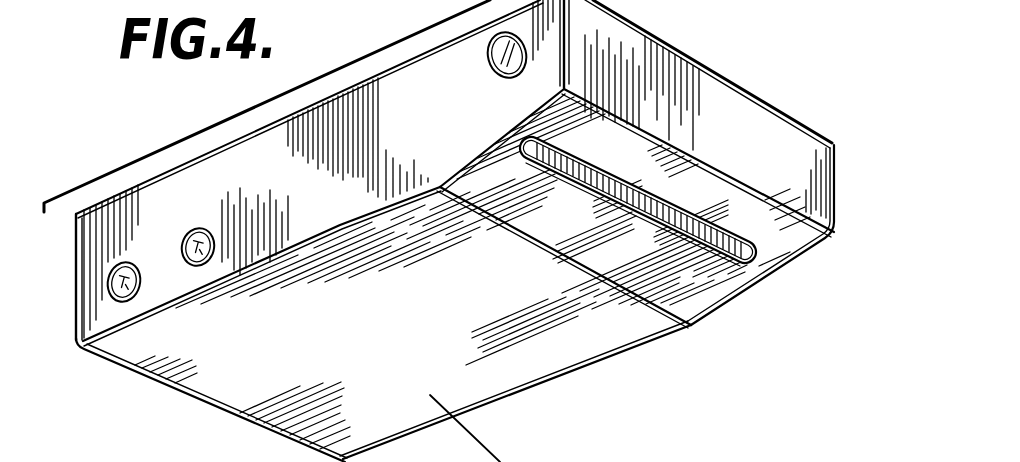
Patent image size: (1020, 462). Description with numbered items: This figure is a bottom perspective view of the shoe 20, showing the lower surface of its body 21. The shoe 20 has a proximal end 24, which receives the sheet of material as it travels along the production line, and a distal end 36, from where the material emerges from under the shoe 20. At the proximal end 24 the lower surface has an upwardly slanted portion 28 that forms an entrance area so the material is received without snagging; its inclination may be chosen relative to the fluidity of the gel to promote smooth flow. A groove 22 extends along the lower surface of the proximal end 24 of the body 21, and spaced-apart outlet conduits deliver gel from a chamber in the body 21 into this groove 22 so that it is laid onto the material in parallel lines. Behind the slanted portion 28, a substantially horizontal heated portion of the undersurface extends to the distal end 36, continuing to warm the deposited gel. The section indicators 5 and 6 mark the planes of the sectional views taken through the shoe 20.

The shoe 20 is at (180, 143).
The body 21 is at (694, 42).
The groove 22 is at (703, 236).
The proximal end 24 is at (737, 119).
The slanted portion 28 is at (700, 299).
The distal end 36 is at (76, 281).
The section line 5- 5 is at (803, 155).
The section line 6- 6 is at (405, 137).